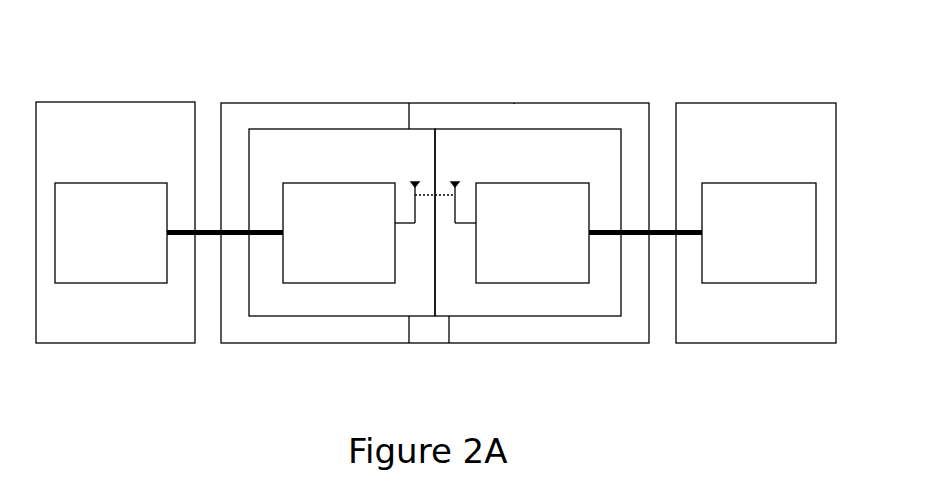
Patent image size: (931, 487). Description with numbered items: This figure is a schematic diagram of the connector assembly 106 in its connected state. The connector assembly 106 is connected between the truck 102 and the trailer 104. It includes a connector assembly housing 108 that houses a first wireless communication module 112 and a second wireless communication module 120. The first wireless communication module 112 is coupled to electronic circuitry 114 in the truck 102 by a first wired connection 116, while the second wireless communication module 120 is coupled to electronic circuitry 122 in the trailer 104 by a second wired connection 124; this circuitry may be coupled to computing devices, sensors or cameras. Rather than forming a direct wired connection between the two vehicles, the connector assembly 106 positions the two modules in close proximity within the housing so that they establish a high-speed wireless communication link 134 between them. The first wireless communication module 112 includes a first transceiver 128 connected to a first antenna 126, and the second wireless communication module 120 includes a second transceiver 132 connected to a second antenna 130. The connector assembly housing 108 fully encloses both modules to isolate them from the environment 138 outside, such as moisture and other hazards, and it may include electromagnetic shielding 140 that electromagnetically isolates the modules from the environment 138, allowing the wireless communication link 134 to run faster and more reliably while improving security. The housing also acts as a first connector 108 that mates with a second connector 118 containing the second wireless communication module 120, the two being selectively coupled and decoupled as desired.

The truck 102 is at (127, 149).
The trailer 104 is at (767, 149).
The connector assembly 106 is at (240, 70).
The connector assembly housing 108 is at (300, 103).
The first wireless communication module 112 is at (348, 163).
The electronic circuitry 114 is at (123, 239).
The first wired connection 116 is at (208, 228).
The second connector 118 is at (514, 103).
The second wireless communication module 120 is at (552, 163).
The electronic circuitry 122 is at (770, 239).
The second wired connection 124 is at (670, 225).
The first antenna 126 is at (413, 227).
The first transceiver 128 is at (351, 239).
The second antenna 130 is at (466, 227).
The second transceiver 132 is at (543, 239).
The wireless communication link 134 is at (443, 195).
The environment 138 is at (579, 77).
The electromagnetic shielding 140 is at (435, 108).